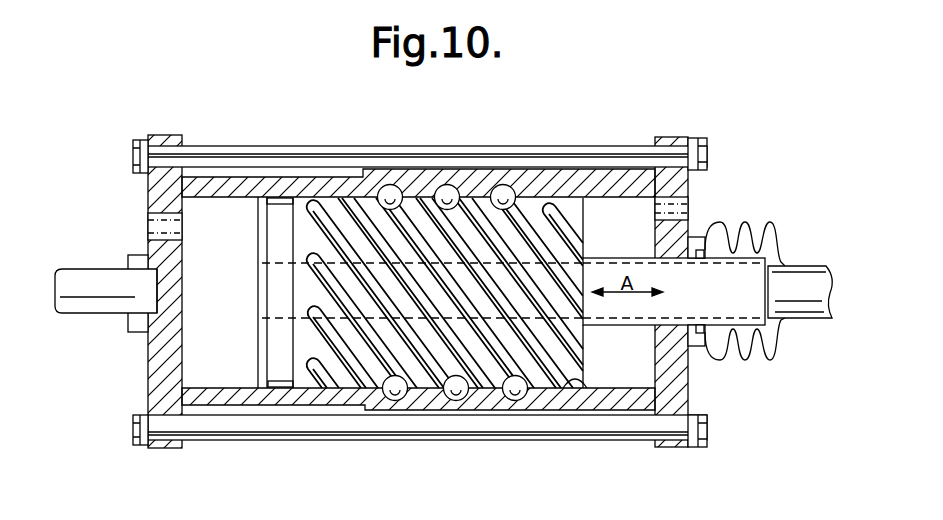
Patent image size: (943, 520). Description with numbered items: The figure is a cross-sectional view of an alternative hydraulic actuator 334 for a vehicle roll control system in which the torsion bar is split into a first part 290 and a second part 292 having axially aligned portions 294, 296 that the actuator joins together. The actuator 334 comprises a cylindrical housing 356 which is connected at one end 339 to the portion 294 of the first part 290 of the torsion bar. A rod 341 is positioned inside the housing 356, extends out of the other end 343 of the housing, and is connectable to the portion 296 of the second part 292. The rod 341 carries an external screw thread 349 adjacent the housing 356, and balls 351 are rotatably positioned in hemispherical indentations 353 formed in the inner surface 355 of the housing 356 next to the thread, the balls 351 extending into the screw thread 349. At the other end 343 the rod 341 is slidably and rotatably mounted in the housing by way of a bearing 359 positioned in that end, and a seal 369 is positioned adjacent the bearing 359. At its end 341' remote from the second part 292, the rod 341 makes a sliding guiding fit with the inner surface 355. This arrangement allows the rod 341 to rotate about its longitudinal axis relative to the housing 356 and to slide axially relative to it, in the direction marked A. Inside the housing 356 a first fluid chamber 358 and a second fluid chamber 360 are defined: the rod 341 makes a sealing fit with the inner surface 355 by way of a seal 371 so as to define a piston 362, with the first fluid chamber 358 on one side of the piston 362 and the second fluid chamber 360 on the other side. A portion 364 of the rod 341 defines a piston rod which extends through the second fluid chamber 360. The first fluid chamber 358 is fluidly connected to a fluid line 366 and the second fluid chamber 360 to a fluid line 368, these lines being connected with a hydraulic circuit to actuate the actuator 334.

The actuator 334 is at (212, 452).
The one end 339 is at (158, 350).
The other end 343 is at (682, 392).
The first fluid chamber 358 is at (223, 207).
The cylindrical housing 356 is at (300, 402).
The fluid line 366 is at (148, 220).
The fluid line 368 is at (688, 208).
The first part 290 is at (96, 310).
The portion 294 is at (107, 280).
The end 341' is at (247, 292).
The seal 371 is at (275, 390).
The rod 341 is at (476, 253).
The second fluid chamber 360 is at (632, 372).
The inner surface 355 is at (596, 380).
The external screw thread 349 is at (398, 186).
The balls 351 is at (500, 188).
The piston 362 is at (420, 380).
The hemispherical indentations 353 is at (457, 398).
The portion 364 is at (693, 300).
The bearing 359 is at (699, 242).
The seal 369 is at (693, 347).
The portion 296 is at (806, 270).
The second part 292 is at (802, 307).